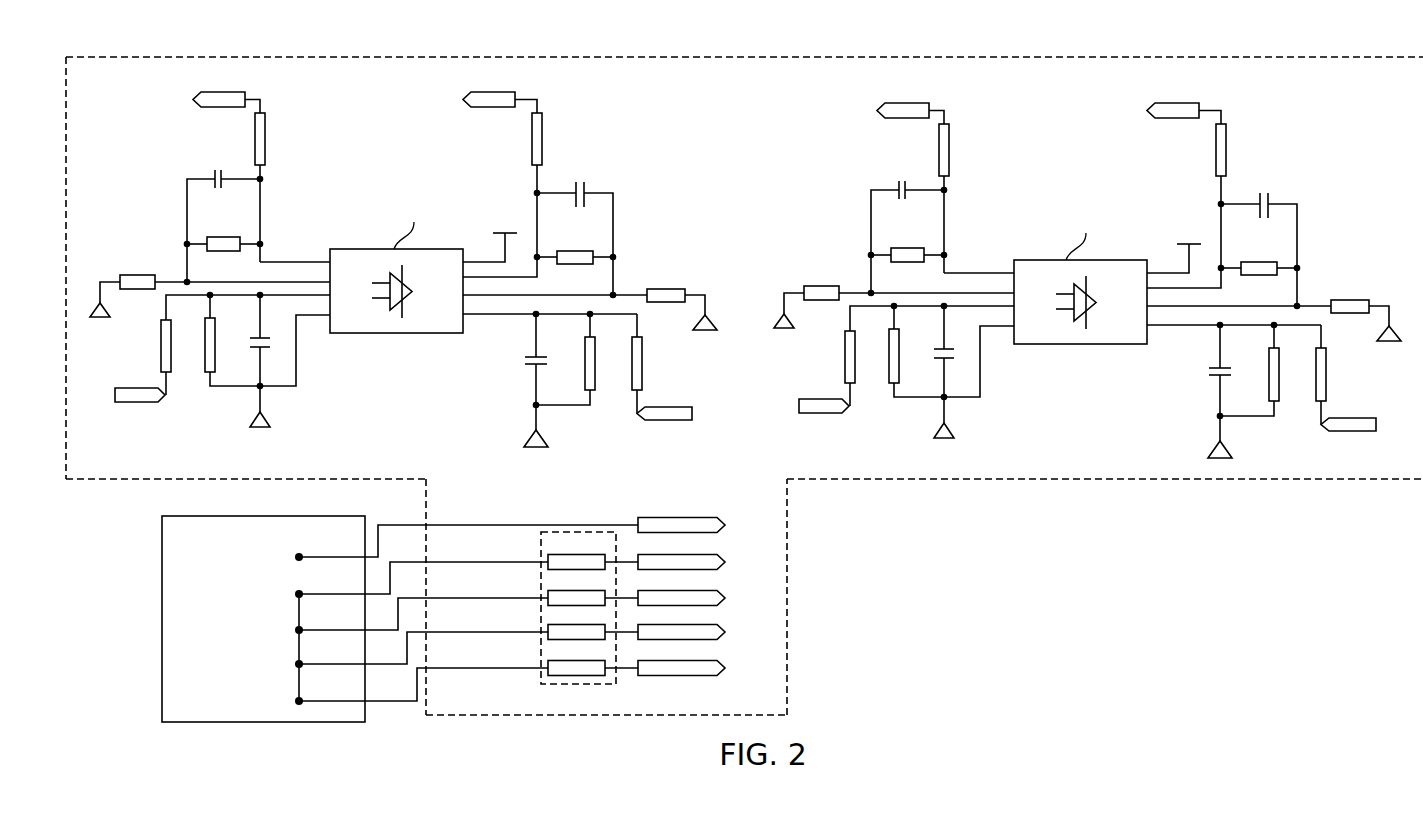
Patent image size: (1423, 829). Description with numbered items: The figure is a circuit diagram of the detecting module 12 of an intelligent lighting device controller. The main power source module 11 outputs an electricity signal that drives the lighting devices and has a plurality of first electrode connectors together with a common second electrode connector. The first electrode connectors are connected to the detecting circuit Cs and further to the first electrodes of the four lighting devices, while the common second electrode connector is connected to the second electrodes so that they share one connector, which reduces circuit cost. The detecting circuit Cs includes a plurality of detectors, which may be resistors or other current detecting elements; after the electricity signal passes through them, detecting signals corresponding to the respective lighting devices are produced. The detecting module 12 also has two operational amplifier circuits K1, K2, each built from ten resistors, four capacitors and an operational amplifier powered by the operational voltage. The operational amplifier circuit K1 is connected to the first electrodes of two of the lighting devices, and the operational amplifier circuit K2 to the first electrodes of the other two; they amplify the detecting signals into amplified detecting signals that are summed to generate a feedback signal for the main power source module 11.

The main power source module 11 is at (162, 623).
The detecting module 12 is at (744, 361).
The operational amplifier circuit K1 is at (350, 155).
The operational amplifier circuit K2 is at (1106, 152).
The detecting circuit Cs is at (587, 532).